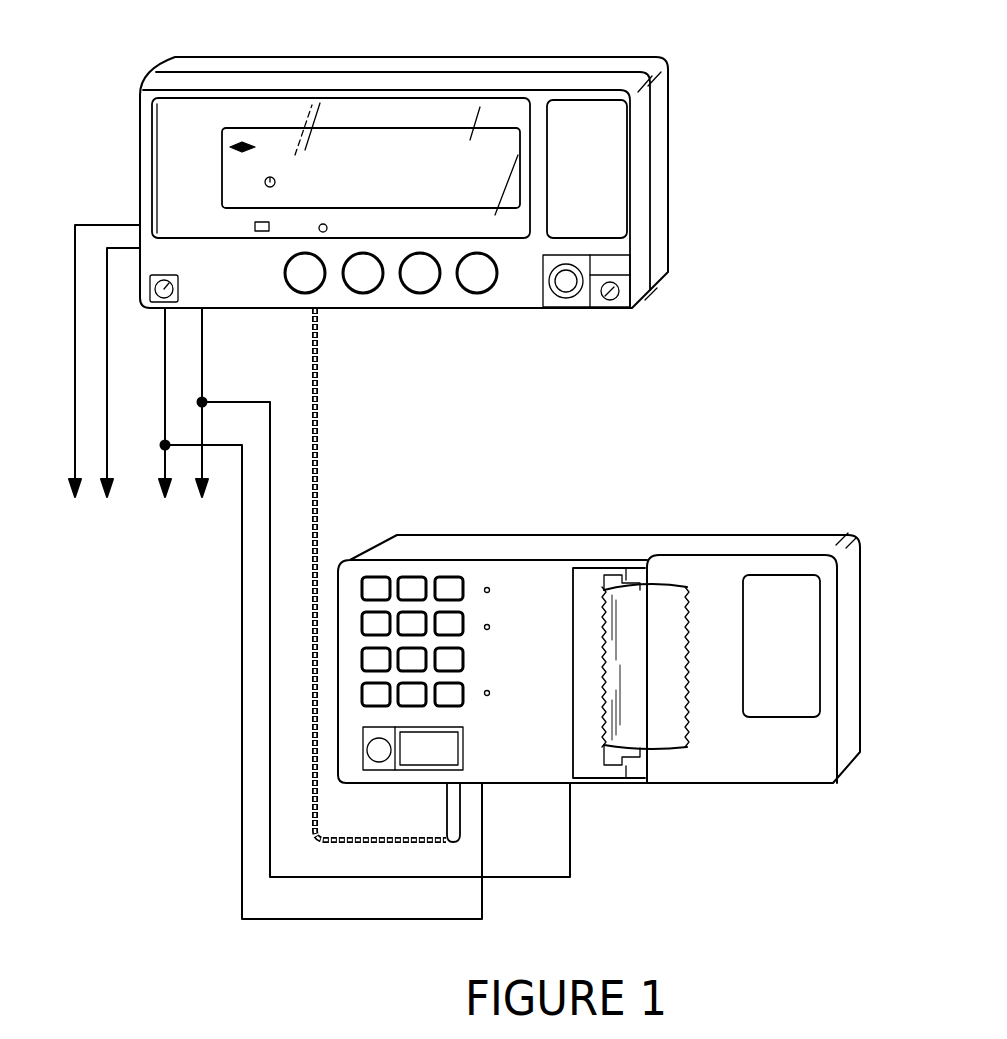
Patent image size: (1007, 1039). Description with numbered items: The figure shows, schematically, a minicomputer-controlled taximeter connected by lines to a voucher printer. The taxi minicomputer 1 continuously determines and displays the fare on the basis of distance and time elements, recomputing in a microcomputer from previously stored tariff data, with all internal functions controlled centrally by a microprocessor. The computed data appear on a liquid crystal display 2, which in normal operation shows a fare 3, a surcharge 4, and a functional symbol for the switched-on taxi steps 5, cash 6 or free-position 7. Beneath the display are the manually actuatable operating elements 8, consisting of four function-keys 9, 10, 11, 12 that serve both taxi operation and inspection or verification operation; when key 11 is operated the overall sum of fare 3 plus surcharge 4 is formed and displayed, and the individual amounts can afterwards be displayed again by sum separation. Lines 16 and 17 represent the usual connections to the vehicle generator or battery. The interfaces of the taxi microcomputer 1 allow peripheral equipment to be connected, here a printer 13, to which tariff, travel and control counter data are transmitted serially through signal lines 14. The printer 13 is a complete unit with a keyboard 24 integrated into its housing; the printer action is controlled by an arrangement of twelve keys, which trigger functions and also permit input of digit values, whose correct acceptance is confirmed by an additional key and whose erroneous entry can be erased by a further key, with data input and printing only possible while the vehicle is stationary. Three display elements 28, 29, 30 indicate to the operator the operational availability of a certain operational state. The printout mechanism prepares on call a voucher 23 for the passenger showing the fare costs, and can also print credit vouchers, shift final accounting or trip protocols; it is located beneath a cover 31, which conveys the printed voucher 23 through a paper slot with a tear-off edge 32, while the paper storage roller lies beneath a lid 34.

The taxi minicomputer 1 is at (706, 93).
The liquid crystal display 2 is at (290, 157).
The fare 3 is at (443, 140).
The surcharge 4 is at (455, 196).
The taxi steps symbol 5 is at (158, 136).
The cash symbol 6 is at (167, 170).
The free-position symbol 7 is at (157, 200).
The operating elements 8 is at (398, 362).
The function key 9 is at (305, 273).
The function key 10 is at (363, 273).
The function key 11 is at (420, 273).
The function key 12 is at (477, 273).
The printer 13 is at (700, 501).
The signal lines 14 is at (312, 822).
The connection line 16 is at (242, 617).
The connection line 17 is at (270, 565).
The voucher 23 is at (665, 632).
The keyboard 24 is at (430, 562).
The display element 28 is at (490, 590).
The display element 29 is at (490, 627).
The display element 30 is at (490, 693).
The cover 31 is at (608, 765).
The tear-off edge 32 is at (637, 763).
The lid 34 is at (782, 765).